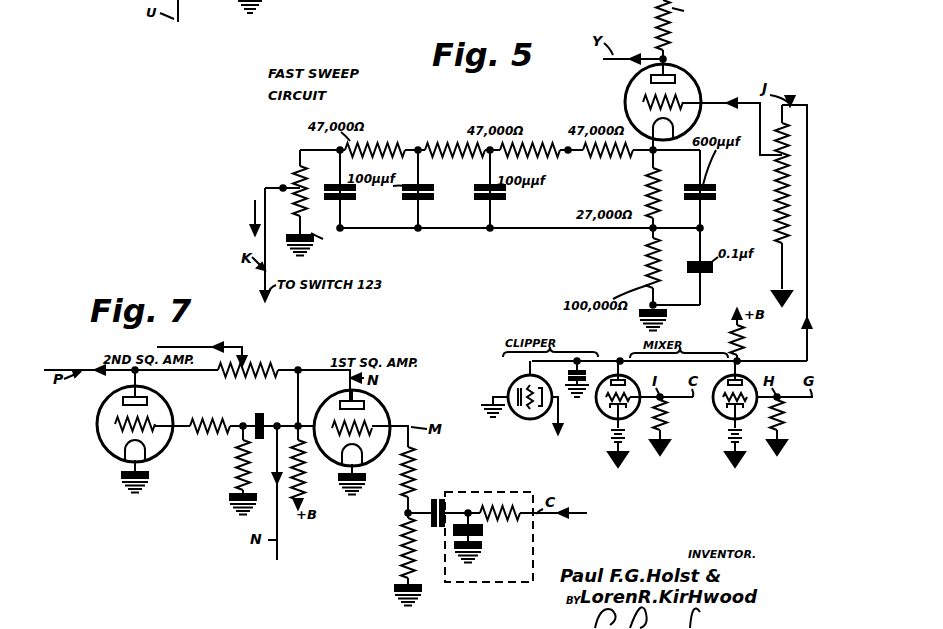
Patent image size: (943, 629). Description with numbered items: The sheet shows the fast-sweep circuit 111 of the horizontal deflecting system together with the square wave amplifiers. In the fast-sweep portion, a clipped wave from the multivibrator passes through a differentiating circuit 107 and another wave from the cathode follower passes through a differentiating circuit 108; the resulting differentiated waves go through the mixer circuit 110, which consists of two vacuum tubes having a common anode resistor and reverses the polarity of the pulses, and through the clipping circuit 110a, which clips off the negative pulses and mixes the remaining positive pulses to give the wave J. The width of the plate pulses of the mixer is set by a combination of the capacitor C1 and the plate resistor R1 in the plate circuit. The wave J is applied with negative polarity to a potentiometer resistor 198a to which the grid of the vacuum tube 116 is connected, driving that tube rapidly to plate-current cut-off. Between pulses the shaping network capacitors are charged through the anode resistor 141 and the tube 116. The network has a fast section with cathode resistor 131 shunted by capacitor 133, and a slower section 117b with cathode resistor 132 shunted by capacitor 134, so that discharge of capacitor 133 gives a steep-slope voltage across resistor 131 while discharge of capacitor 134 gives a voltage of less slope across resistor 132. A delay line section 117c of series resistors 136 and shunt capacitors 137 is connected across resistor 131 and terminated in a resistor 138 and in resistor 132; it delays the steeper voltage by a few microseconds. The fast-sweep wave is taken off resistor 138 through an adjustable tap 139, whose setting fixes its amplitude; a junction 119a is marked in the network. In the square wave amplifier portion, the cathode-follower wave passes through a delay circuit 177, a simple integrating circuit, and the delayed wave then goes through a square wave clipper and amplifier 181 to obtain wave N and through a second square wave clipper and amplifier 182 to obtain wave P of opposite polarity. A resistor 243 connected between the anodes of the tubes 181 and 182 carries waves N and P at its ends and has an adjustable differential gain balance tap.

In FIG. 5, the series resistors 136 is at (418, 140).
In FIG. 5, the fast-sweep circuit 111 is at (481, 119).
In FIG. 5, the terminating resistor 138 is at (300, 160).
In FIG. 5, the adjustable tap 139 is at (287, 187).
In FIG. 5, the shunt capacitors 137 is at (346, 197).
In FIG. 5, the delay line section 117c is at (469, 218).
In FIG. 5, the cathode resistor 131 is at (648, 192).
In FIG. 5, the junction 119a is at (695, 228).
In FIG. 5, the cathode resistor 132 is at (648, 260).
In FIG. 5, the network section 117b is at (694, 296).
In FIG. 5, the capacitor 133 is at (706, 199).
In FIG. 5, the capacitor 134 is at (709, 270).
In FIG. 5, the vacuum tube 116 is at (641, 84).
In FIG. 5, the anode resistor 141 is at (660, 51).
In FIG. 5, the potentiometer resistor 198a is at (778, 182).
In FIG. 5, the clipping circuit 110a is at (601, 350).
In FIG. 5, the mixer circuit 110 is at (704, 401).
In FIG. 5, the differentiating circuit 108 is at (666, 424).
In FIG. 5, the differentiating circuit 107 is at (782, 424).
In FIG. 5, the plate resistor R1 is at (742, 340).
In FIG. 5, the capacitor C1 is at (584, 372).
In FIG. 7, the resistor 243 is at (247, 362).
In FIG. 7, the square wave clipper and amplifier 182 is at (99, 437).
In FIG. 7, the square wave clipper and amplifier 181 is at (385, 456).
In FIG. 7, the delay circuit 177 is at (480, 492).